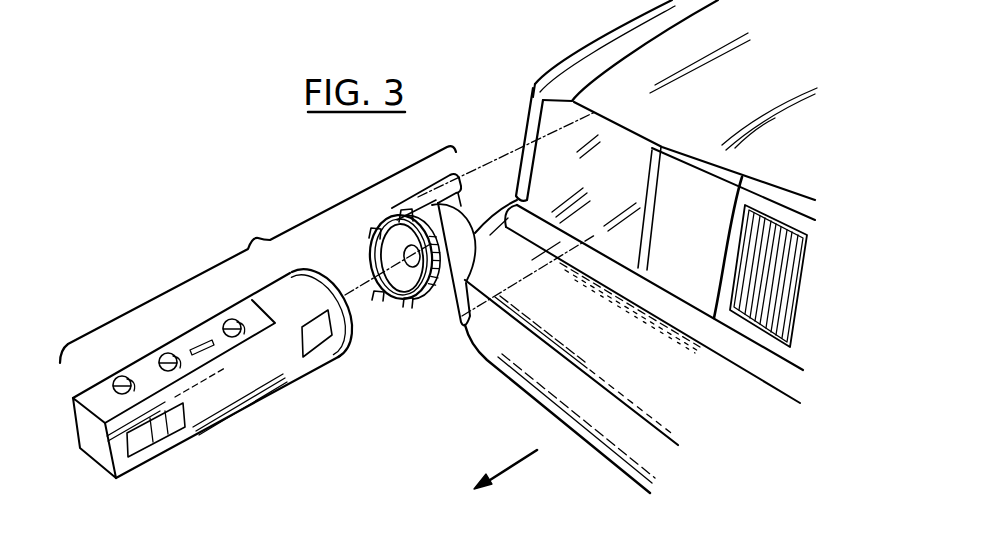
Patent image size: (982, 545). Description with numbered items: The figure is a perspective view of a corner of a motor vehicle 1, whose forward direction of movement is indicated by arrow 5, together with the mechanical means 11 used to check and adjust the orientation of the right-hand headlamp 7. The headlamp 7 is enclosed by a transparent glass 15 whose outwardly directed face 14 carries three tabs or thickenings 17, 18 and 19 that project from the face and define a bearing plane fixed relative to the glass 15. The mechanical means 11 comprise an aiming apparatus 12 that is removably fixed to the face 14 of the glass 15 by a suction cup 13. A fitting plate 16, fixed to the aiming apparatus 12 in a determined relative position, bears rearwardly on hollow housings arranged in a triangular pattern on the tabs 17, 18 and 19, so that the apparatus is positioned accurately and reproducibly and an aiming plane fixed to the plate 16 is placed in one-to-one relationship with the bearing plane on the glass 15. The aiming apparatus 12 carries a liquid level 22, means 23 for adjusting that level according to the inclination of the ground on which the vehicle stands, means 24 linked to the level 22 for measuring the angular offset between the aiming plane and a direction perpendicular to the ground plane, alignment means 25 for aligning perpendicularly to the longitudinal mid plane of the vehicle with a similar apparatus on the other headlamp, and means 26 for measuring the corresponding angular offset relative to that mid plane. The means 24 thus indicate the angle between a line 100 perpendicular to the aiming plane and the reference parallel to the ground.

The motor vehicle 1 is at (590, 36).
The direction of forward movement 5 is at (518, 463).
The headlamp 7 is at (600, 266).
The mechanical means 11 is at (255, 236).
The aiming apparatus 12 is at (277, 397).
The suction cup 13 is at (459, 208).
The outwardly directed face 14 is at (511, 364).
The transparent glass 15 is at (618, 163).
The fitting plate 16 is at (436, 330).
The tab 17 is at (570, 125).
The tab 18 is at (591, 242).
The tab 19 is at (523, 204).
The liquid level 22 is at (212, 349).
The level adjusting means 23 is at (175, 369).
The vertical offset measuring means 24 is at (243, 337).
The alignment means 25 is at (151, 444).
The lateral offset measuring means 26 is at (112, 396).
The line perpendicular to the aiming plane 100 is at (375, 293).